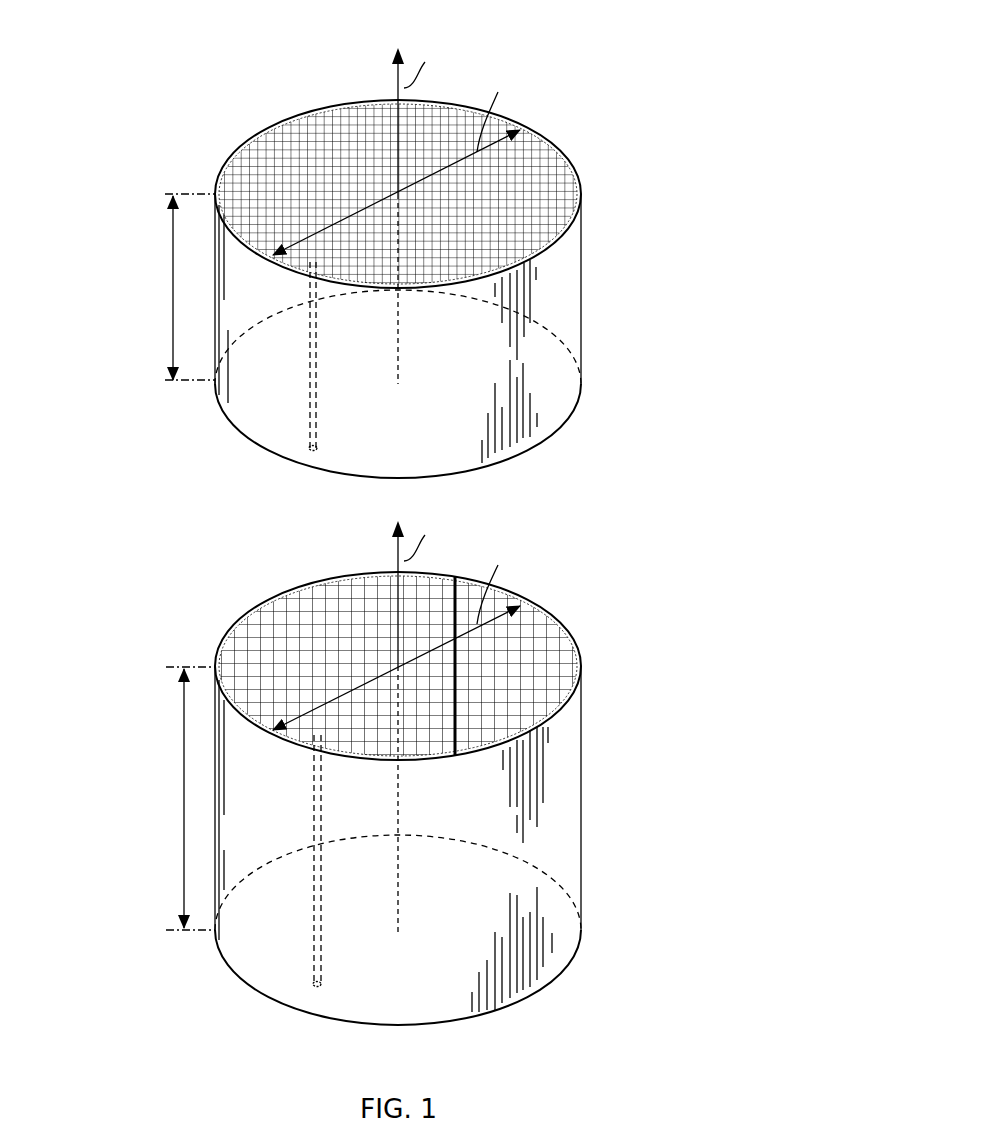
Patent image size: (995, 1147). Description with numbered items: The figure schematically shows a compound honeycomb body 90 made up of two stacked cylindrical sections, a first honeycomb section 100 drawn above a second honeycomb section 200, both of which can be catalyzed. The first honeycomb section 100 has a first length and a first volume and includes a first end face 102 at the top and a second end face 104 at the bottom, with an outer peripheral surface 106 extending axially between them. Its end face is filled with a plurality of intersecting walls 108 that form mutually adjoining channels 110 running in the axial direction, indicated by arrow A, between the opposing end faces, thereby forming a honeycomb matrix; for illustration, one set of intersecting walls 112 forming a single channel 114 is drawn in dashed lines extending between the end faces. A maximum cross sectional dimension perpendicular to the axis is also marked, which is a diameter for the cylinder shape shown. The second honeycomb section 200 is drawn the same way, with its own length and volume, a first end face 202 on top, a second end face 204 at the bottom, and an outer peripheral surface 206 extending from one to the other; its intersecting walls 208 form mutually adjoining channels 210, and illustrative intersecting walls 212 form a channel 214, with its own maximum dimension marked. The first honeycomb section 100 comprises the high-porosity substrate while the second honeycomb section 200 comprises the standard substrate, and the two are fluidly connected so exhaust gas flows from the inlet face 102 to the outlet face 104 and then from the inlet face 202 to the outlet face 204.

The compound honeycomb body 90 is at (65, 29).
The first honeycomb section 100 is at (131, 191).
The first end face 102 is at (425, 175).
The second end face 104 is at (473, 484).
The outer peripheral surface 106 is at (527, 345).
The intersecting walls 108 is at (302, 142).
The channels 110 is at (290, 155).
The intersecting walls 112 is at (308, 345).
The channel 114 is at (208, 379).
The second honeycomb section 200 is at (121, 696).
The first end face 202 is at (425, 647).
The second end face 204 is at (527, 1006).
The outer peripheral surface 206 is at (527, 820).
The intersecting walls 208 is at (302, 614).
The channels 210 is at (290, 628).
The intersecting walls 212 is at (313, 886).
The channel 214 is at (198, 883).